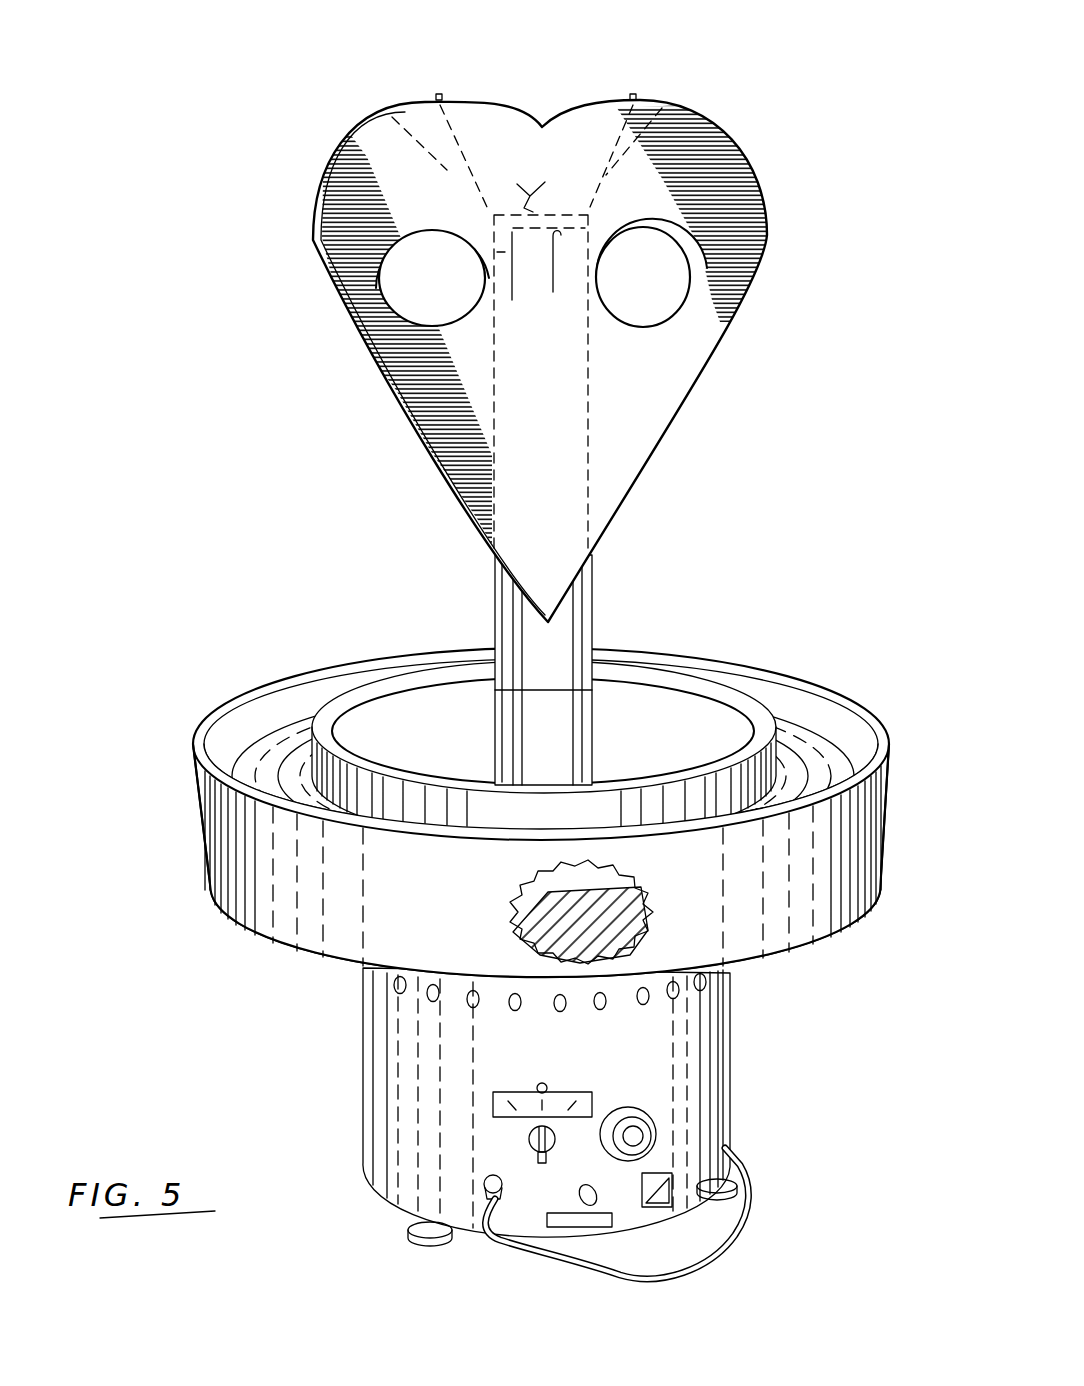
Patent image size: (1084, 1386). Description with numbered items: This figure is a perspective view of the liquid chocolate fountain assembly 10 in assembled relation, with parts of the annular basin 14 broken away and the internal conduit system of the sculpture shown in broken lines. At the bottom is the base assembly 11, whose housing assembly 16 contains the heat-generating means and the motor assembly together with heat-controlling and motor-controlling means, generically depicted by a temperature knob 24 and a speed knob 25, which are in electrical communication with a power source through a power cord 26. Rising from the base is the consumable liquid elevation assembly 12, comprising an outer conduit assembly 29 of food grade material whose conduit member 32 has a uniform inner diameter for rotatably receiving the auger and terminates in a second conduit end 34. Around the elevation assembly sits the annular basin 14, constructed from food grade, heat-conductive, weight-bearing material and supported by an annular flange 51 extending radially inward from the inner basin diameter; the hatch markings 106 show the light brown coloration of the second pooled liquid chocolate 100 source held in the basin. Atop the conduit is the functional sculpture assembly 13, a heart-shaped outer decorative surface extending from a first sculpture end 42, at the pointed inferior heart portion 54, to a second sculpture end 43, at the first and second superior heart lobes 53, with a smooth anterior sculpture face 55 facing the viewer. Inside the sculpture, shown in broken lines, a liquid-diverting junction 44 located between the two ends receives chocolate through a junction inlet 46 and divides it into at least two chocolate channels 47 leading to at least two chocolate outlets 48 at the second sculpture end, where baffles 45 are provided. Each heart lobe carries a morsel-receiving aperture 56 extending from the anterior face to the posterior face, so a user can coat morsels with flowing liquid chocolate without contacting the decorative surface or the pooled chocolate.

The liquid chocolate fountain assembly 10 is at (812, 140).
The base assembly 11 is at (597, 1144).
The consumable liquid elevation assembly 12 is at (620, 583).
The functional sculpture assembly 13 is at (556, 316).
The annular basin 14 is at (546, 748).
The housing assembly 16 is at (730, 1083).
The temperature knob 24 is at (530, 1137).
The speed knob 25 is at (633, 1136).
The power cord 26 is at (527, 1248).
The outer conduit assembly 29 is at (557, 660).
The conduit member 32 is at (557, 683).
The second conduit end 34 is at (517, 282).
The first sculpture end 42 is at (547, 590).
The second sculpture end 43 is at (507, 92).
The liquid-diverting junction 44 is at (532, 172).
The baffles 45 is at (439, 94).
The junction inlet 46 is at (560, 280).
The chocolate channels 47 is at (465, 162).
The chocolate outlets 48 is at (405, 102).
The annular flange 51 is at (323, 730).
The superior heart lobes 53 is at (353, 125).
The pointed inferior heart portion 54 is at (475, 552).
The anterior sculpture face 55 is at (545, 452).
The morsel-receiving apertures 56 is at (427, 260).
The liquid chocolate 100 is at (822, 768).
The hatch markings 106 is at (513, 930).